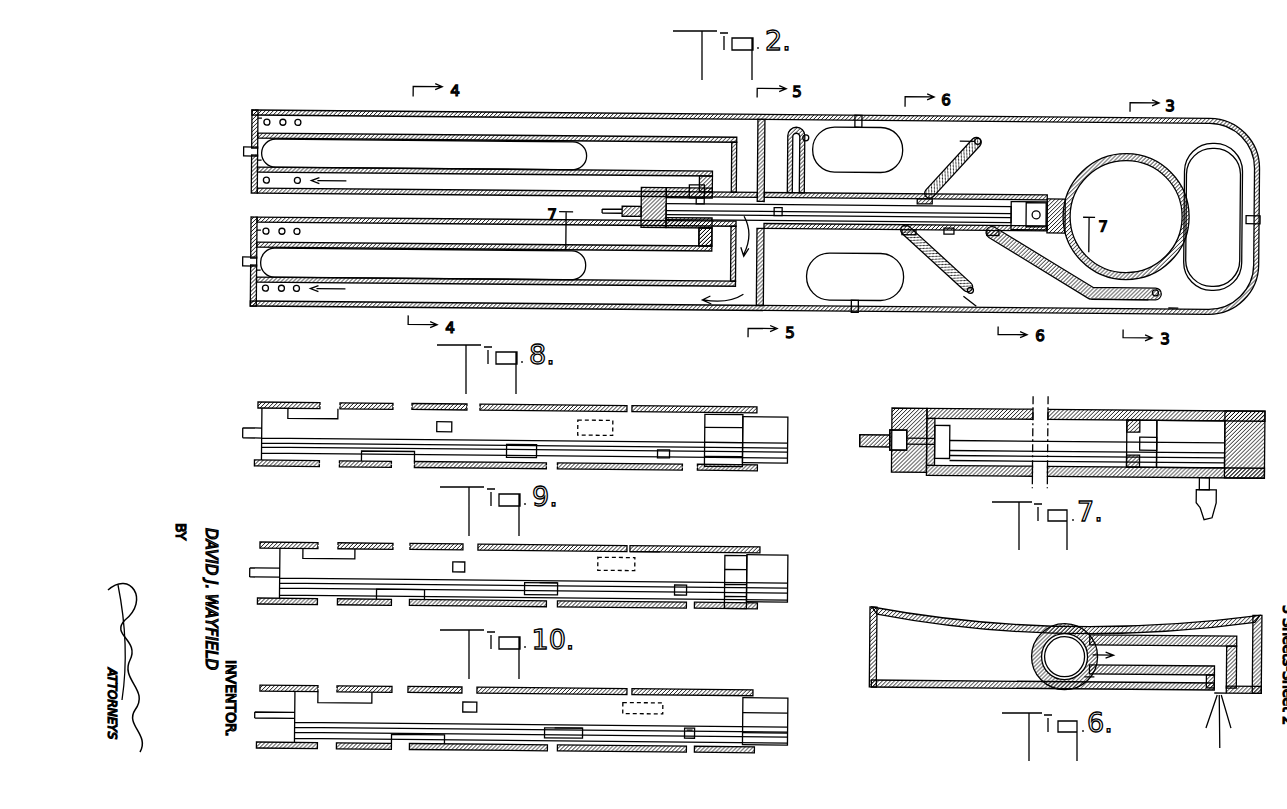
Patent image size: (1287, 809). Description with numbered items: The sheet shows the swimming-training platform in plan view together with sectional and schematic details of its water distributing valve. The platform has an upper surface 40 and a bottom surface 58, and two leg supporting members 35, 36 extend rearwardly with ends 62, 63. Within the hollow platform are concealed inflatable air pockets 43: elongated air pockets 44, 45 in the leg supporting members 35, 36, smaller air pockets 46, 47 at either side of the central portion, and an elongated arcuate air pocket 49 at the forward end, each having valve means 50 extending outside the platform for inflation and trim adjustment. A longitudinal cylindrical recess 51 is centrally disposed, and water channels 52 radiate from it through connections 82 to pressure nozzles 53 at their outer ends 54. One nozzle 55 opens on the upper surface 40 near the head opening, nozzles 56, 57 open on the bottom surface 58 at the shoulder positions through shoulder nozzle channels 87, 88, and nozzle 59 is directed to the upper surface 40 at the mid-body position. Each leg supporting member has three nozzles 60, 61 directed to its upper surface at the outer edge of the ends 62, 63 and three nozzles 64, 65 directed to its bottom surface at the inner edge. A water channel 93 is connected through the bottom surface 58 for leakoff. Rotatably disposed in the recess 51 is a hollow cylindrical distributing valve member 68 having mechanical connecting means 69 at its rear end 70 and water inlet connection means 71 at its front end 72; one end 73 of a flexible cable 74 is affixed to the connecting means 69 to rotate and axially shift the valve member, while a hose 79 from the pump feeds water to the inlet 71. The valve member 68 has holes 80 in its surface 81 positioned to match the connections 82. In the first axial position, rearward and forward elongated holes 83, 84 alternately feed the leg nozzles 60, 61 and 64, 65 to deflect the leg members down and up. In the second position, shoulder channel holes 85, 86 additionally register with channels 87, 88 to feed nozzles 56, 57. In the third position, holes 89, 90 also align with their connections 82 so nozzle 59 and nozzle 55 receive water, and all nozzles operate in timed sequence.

In FIG. 2, the leg supporting member 35 is at (258, 175).
In FIG. 2, the leg supporting member 36 is at (258, 285).
In FIG. 2, the upper surface 40 is at (755, 212).
In FIG. 6, the upper surface 40 is at (1064, 648).
In FIG. 2, the inflatable air pockets 43 is at (358, 150).
In FIG. 2, the elongated air pocket 44 is at (345, 265).
In FIG. 2, the elongated air pocket 45 is at (284, 228).
In FIG. 2, the air pocket 46 is at (877, 140).
In FIG. 2, the air pocket 47 is at (886, 293).
In FIG. 2, the arcuate air pocket 49 is at (1230, 200).
In FIG. 2, the valve means 50 is at (243, 152).
In FIG. 2, the cylindrical recess 51 is at (998, 192).
In FIG. 7, the cylindrical recess 51 is at (1180, 425).
In FIG. 2, the water channels 52 is at (606, 172).
In FIG. 2, the pressure nozzles 53 is at (268, 117).
In FIG. 6, the pressure nozzles 53 is at (1213, 692).
In FIG. 2, the outer ends 54 is at (256, 112).
In FIG. 2, the nozzle 55 is at (1172, 300).
In FIG. 2, the nozzle 56 is at (968, 135).
In FIG. 2, the nozzle 57 is at (977, 298).
In FIG. 6, the nozzle 57 is at (1237, 640).
In FIG. 6, the bottom surface 58 is at (935, 687).
In FIG. 2, the nozzle 59 is at (790, 144).
In FIG. 2, the nozzles 60 is at (291, 117).
In FIG. 2, the nozzles 61 is at (284, 292).
In FIG. 2, the end 62 is at (252, 128).
In FIG. 2, the end 63 is at (252, 235).
In FIG. 2, the nozzles 64 is at (302, 230).
In FIG. 2, the nozzles 65 is at (325, 225).
In FIG. 2, the distributing valve member 68 is at (832, 219).
In FIG. 8, the distributing valve member 68 is at (660, 420).
In FIG. 9, the distributing valve member 68 is at (625, 598).
In FIG. 10, the distributing valve member 68 is at (710, 698).
In FIG. 7, the distributing valve member 68 is at (1135, 430).
In FIG. 6, the distributing valve member 68 is at (1050, 630).
In FIG. 2, the mechanical connecting means 69 is at (648, 186).
In FIG. 7, the mechanical connecting means 69 is at (893, 442).
In FIG. 2, the rear end 70 is at (690, 228).
In FIG. 7, the rear end 70 is at (920, 458).
In FIG. 7, the water inlet connection means 71 is at (1145, 435).
In FIG. 7, the front end 72 is at (1145, 470).
In FIG. 2, the cable end 73 is at (641, 216).
In FIG. 7, the cable end 73 is at (872, 434).
In FIG. 2, the flexible cable 74 is at (625, 216).
In FIG. 7, the flexible cable 74 is at (860, 441).
In FIG. 7, the hose 79 is at (1215, 493).
In FIG. 2, the holes 80 is at (698, 182).
In FIG. 8, the holes 80 is at (545, 445).
In FIG. 9, the holes 80 is at (535, 582).
In FIG. 10, the holes 80 is at (505, 690).
In FIG. 6, the holes 80 is at (1095, 633).
In FIG. 2, the surface 81 is at (905, 192).
In FIG. 8, the surface 81 is at (700, 403).
In FIG. 9, the surface 81 is at (690, 543).
In FIG. 10, the surface 81 is at (585, 688).
In FIG. 2, the connections 82 is at (790, 186).
In FIG. 8, the connections 82 is at (335, 404).
In FIG. 9, the connections 82 is at (395, 544).
In FIG. 10, the connections 82 is at (330, 688).
In FIG. 6, the connections 82 is at (1100, 665).
In FIG. 8, the elongated hole 83 is at (300, 405).
In FIG. 9, the elongated hole 83 is at (315, 546).
In FIG. 10, the elongated hole 83 is at (350, 703).
In FIG. 8, the elongated hole 84 is at (382, 456).
In FIG. 9, the elongated hole 84 is at (385, 593).
In FIG. 10, the elongated hole 84 is at (430, 740).
In FIG. 9, the shoulder channel hole 85 is at (550, 582).
In FIG. 10, the shoulder channel hole 85 is at (548, 727).
In FIG. 9, the shoulder channel hole 86 is at (610, 554).
In FIG. 10, the shoulder channel hole 86 is at (625, 700).
In FIG. 2, the shoulder nozzle channel 87 is at (948, 170).
In FIG. 9, the shoulder nozzle channel 87 is at (635, 544).
In FIG. 2, the shoulder nozzle channel 88 is at (940, 262).
In FIG. 6, the shoulder nozzle channel 88 is at (1143, 648).
In FIG. 10, the hole 89 is at (463, 703).
In FIG. 10, the hole 90 is at (690, 725).
In FIG. 2, the water channel 93 is at (1105, 297).